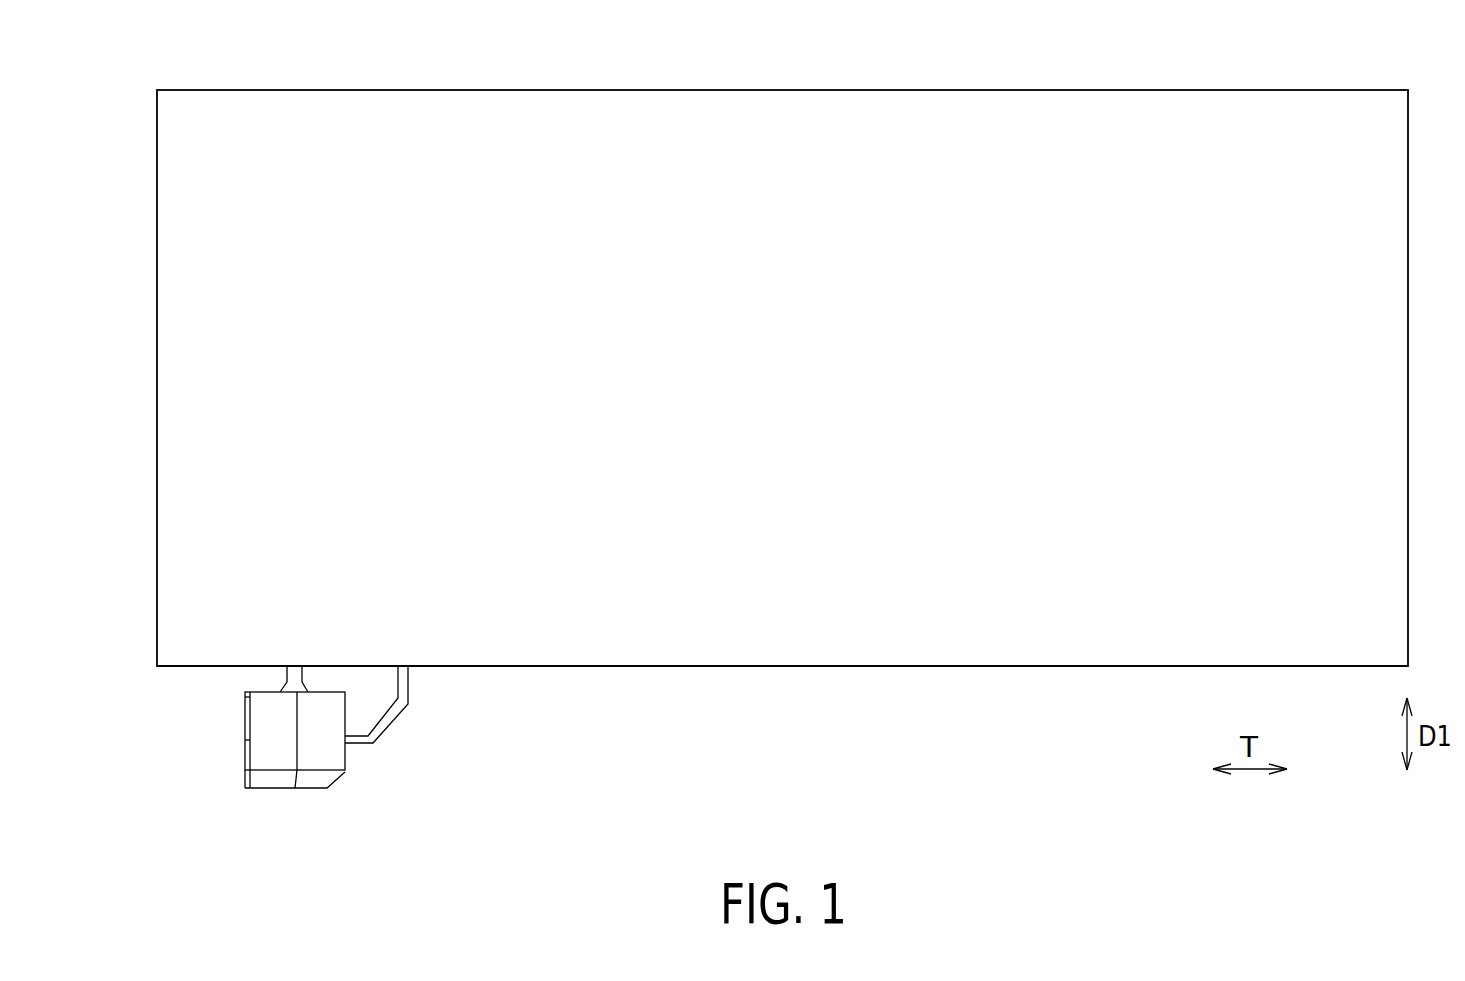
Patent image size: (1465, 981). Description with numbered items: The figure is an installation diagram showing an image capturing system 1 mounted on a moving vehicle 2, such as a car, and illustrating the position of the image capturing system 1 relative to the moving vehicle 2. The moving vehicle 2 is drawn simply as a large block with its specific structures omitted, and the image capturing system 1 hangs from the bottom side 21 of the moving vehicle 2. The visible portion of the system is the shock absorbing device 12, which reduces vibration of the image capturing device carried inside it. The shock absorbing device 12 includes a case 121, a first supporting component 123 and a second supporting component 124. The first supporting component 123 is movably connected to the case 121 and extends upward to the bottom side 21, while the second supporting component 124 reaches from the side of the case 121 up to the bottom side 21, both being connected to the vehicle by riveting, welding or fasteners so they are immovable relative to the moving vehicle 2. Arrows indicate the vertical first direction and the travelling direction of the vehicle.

The image capturing system 1 is at (412, 760).
The moving vehicle 2 is at (1340, 70).
The bottom side 21 is at (782, 667).
The shock absorbing device 12 is at (138, 680).
The case 121 is at (273, 756).
The first supporting component 123 is at (287, 679).
The second supporting component 124 is at (362, 744).